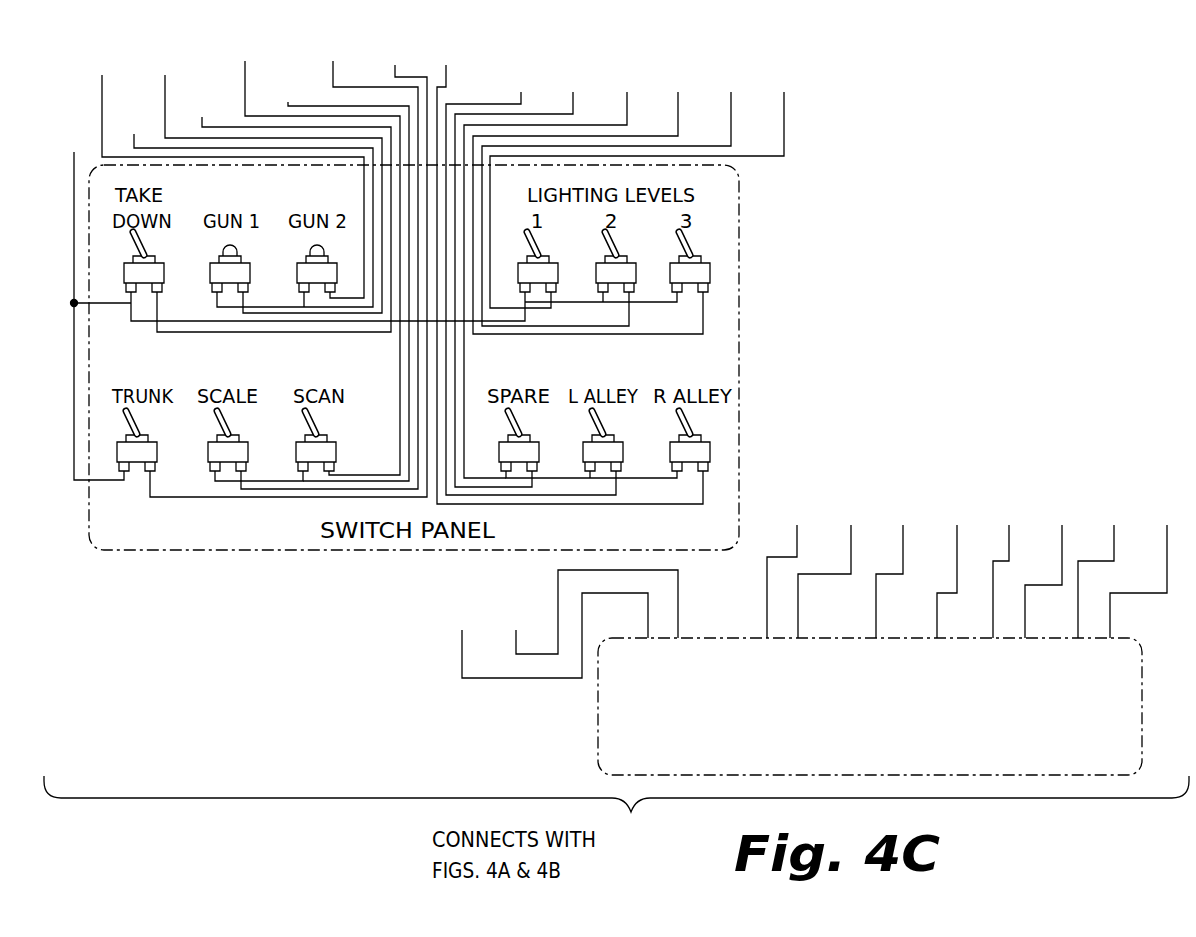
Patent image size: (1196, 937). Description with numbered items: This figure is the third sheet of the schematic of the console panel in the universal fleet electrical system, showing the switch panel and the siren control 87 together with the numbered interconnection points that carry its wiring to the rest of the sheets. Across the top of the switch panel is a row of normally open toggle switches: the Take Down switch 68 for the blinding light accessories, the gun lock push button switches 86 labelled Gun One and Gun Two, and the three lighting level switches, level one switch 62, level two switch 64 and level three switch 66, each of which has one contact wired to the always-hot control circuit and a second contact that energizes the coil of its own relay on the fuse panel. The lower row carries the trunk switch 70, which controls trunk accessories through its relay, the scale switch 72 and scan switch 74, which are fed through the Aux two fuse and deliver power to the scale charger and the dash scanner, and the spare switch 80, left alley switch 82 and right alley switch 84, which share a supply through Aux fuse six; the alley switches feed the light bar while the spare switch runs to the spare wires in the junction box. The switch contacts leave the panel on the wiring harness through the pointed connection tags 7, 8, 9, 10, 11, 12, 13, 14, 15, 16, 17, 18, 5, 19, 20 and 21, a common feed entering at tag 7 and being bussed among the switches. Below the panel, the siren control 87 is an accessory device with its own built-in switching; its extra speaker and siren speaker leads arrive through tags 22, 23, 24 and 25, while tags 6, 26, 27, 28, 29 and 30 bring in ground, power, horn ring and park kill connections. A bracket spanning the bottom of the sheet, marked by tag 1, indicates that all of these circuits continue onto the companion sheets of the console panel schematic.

The connection to FIGS. 4A and 4B 1 is at (616, 825).
The interconnection line 5 is at (555, 261).
The interconnection line 6 is at (899, 558).
The interconnection line 7 is at (89, 292).
The interconnection line 8 is at (223, 163).
The interconnection line 9 is at (243, 197).
The interconnection line 10 is at (263, 170).
The interconnection line 11 is at (274, 201).
The interconnection line 12 is at (312, 244).
The interconnection line 13 is at (338, 268).
The interconnection line 14 is at (329, 251).
The interconnection line 15 is at (288, 257).
The interconnection line 16 is at (564, 261).
The interconnection line 17 is at (531, 270).
The interconnection line 18 is at (524, 266).
The interconnection line 19 is at (588, 189).
The interconnection line 20 is at (616, 185).
The interconnection line 21 is at (647, 176).
The interconnection line 22 is at (545, 630).
The interconnection line 23 is at (587, 612).
The interconnection line 24 is at (792, 558).
The interconnection line 25 is at (834, 558).
The interconnection line 26 is at (957, 558).
The interconnection line 27 is at (1009, 558).
The interconnection line 28 is at (1053, 558).
The interconnection line 29 is at (1106, 558).
The interconnection line 30 is at (1148, 558).
The lighting level 1 switch 62 is at (575, 255).
The lighting level 2 switch 64 is at (654, 255).
The lighting level 3 switch 66 is at (701, 255).
The Take Down switch 68 is at (157, 250).
The trunk switch 70 is at (150, 431).
The scale switch 72 is at (237, 430).
The scan switch 74 is at (330, 442).
The spare switch 80 is at (529, 430).
The left alley switch 82 is at (645, 440).
The right alley switch 84 is at (725, 430).
The push button switches 86 is at (297, 275).
The siren control 87 is at (598, 713).